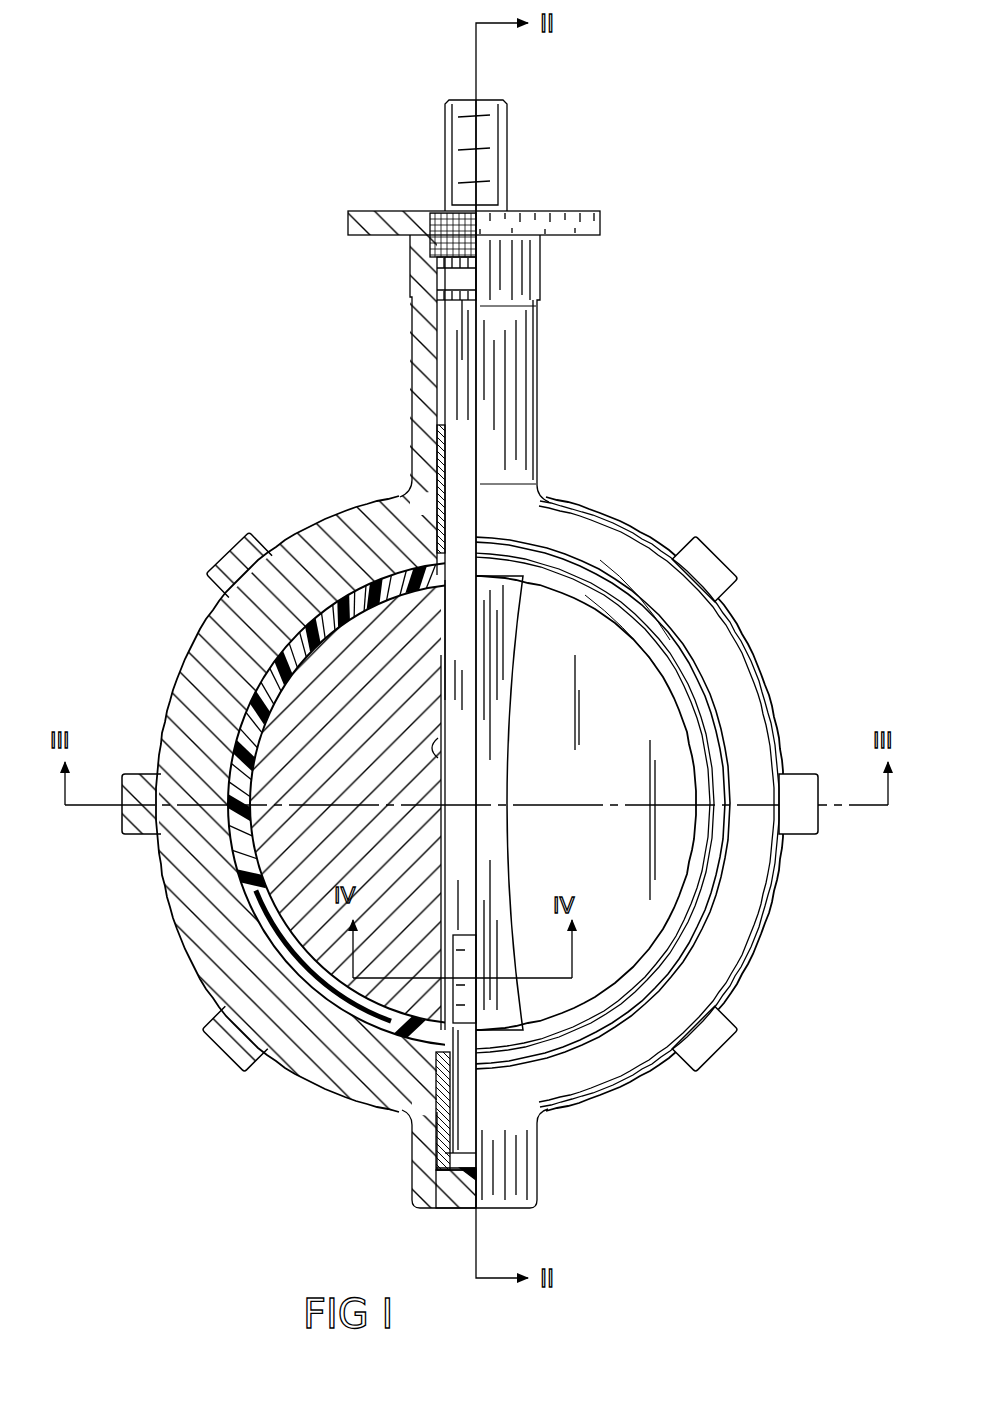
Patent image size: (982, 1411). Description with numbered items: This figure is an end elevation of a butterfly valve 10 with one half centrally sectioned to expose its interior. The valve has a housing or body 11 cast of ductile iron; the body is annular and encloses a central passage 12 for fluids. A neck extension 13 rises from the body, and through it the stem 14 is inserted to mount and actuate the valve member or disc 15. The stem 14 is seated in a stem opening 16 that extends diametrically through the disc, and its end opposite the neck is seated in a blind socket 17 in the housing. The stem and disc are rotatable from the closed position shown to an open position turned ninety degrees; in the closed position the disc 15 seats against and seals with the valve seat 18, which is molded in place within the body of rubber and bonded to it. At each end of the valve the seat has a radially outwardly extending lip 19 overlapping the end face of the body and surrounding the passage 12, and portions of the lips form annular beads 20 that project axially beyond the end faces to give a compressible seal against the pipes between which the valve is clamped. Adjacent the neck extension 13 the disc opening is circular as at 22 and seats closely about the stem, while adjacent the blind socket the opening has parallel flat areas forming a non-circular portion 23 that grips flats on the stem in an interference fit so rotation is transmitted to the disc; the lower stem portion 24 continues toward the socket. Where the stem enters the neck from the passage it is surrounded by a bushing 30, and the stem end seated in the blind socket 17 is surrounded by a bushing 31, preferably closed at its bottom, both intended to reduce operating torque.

The valve 10 is at (601, 337).
The housing or body 11 is at (308, 521).
The central passage 12 is at (677, 702).
The neck extension 13 is at (540, 403).
The stem 14 is at (450, 343).
The valve member or disc 15 is at (673, 760).
The stem opening 16 is at (432, 745).
The blind socket 17 is at (463, 1180).
The valve seat 18 is at (256, 696).
The lip 19 is at (651, 539).
The annular beads 20 is at (566, 560).
The circular portion of central opening 22 is at (448, 619).
The non-circular portion 23 is at (464, 958).
The lower stem portion 24 is at (447, 867).
The bushing 30 is at (436, 448).
The bushing 31 is at (434, 1140).